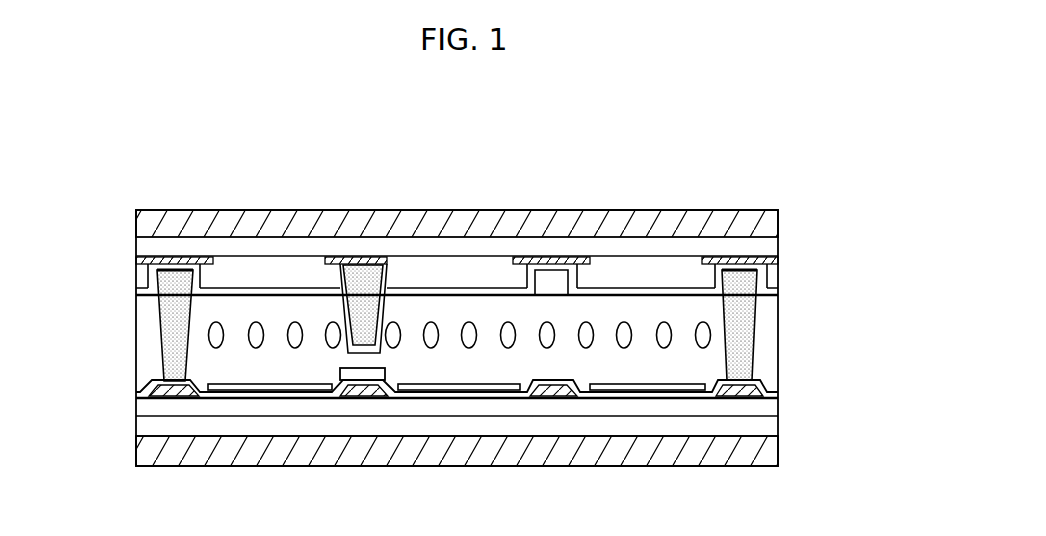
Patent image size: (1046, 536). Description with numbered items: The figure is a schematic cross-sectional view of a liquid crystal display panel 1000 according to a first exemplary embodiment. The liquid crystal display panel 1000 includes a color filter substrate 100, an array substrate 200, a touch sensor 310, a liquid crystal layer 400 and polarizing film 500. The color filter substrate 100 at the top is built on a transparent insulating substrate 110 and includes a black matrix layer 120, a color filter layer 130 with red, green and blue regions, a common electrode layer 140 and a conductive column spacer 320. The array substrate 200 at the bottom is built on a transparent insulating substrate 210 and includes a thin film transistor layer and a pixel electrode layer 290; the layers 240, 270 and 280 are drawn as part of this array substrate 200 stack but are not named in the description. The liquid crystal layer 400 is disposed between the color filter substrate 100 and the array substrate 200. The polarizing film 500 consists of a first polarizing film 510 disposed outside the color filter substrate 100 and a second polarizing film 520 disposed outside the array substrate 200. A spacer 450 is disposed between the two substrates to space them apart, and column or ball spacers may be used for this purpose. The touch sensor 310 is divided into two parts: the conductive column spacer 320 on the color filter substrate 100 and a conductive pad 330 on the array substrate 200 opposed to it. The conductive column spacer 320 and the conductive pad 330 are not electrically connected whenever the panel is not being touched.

The liquid crystal display panel 1000 is at (762, 184).
The polarizing film 500 is at (490, 366).
The first polarizing film 510 is at (770, 221).
The second polarizing film 520 is at (770, 455).
The color filter substrate 100 is at (519, 273).
The transparent insulating substrate 110 is at (772, 242).
The black matrix layer 120 is at (774, 262).
The color filter layer 130 is at (697, 282).
The common electrode layer 140 is at (717, 292).
The array substrate 200 is at (519, 388).
The transparent insulating substrate 210 is at (774, 430).
The thin film transistor layer 240 is at (774, 410).
The planarization layer 270 is at (750, 392).
The pixel defining layer 280 is at (753, 378).
The pixel electrode layer 290 is at (686, 381).
The touch sensor 310 is at (392, 322).
The conductive column spacer 320 is at (341, 280).
The conductive pad 330 is at (192, 334).
The liquid crystal layer 400 is at (345, 367).
The spacer 450 is at (152, 381).